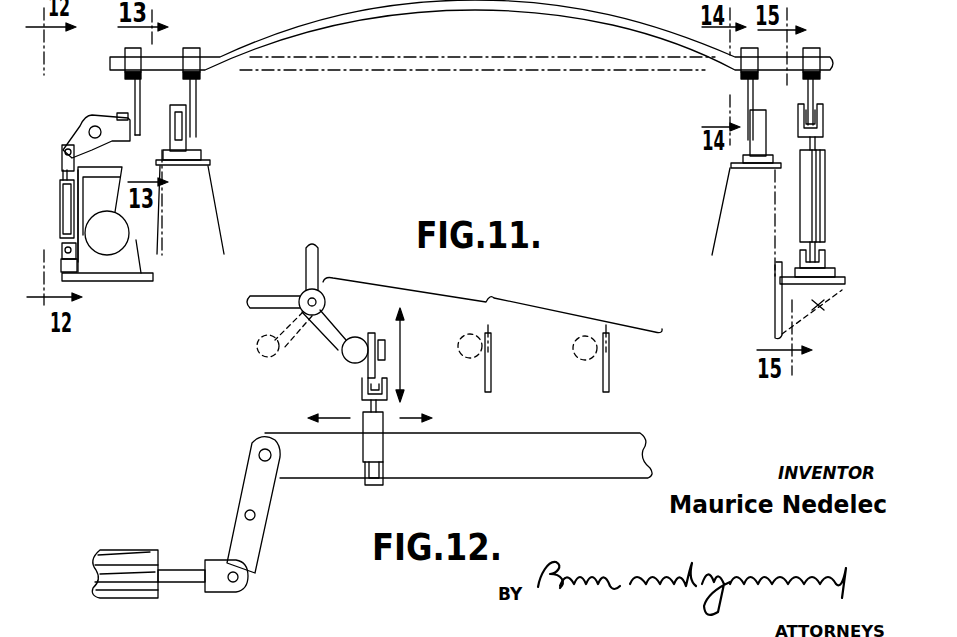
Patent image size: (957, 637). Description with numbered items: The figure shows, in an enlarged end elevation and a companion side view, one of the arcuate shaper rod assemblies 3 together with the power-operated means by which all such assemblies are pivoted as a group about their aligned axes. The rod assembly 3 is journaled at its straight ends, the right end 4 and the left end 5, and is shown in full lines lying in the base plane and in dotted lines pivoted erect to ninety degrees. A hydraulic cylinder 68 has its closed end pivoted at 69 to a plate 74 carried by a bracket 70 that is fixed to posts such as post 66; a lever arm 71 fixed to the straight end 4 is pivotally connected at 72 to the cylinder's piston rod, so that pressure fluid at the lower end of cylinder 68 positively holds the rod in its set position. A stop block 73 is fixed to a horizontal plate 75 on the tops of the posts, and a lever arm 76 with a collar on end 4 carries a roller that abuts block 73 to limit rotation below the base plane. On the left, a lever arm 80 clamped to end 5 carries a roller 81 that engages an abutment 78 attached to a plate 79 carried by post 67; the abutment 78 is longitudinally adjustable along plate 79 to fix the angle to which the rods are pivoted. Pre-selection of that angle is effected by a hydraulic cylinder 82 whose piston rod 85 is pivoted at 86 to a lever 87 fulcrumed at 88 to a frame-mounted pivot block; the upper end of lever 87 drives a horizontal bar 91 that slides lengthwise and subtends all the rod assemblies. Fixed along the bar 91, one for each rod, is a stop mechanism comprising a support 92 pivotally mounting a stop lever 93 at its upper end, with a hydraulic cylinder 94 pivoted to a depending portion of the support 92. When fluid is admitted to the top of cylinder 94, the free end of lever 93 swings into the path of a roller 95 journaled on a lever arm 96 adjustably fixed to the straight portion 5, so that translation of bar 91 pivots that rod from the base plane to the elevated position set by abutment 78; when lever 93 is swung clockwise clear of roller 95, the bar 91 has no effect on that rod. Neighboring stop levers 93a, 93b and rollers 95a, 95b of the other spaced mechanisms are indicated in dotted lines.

In FIG. 12, the rod assembly 3 is at (274, 297).
In FIG. 11, the straight end of rod 4 is at (830, 63).
In FIG. 11, the straight left end of rod 5 is at (112, 62).
In FIG. 11, the post 66 is at (735, 206).
In FIG. 11, the post 67 is at (198, 203).
In FIG. 11, the hydraulic cylinder 68 is at (822, 200).
In FIG. 11, the pivot 69 is at (828, 253).
In FIG. 11, the bracket 70 is at (829, 312).
In FIG. 11, the lever arm 71 is at (818, 97).
In FIG. 11, the pivotal connection 72 is at (820, 112).
In FIG. 11, the stop block 73 is at (760, 143).
In FIG. 11, the plate 74 is at (843, 288).
In FIG. 11, the horizontal plate 75 is at (736, 165).
In FIG. 11, the lever arm 76 is at (753, 100).
In FIG. 11, the abutment 78 is at (186, 143).
In FIG. 11, the plate 79 is at (212, 160).
In FIG. 11, the lever arm 80 is at (197, 93).
In FIG. 11, the roller 81 is at (183, 121).
In FIG. 12, the hydraulic cylinder 82 is at (130, 568).
In FIG. 12, the piston rod 85 is at (185, 571).
In FIG. 12, the pivotal connection 86 is at (240, 578).
In FIG. 12, the lever 87 is at (258, 465).
In FIG. 12, the fulcrum 88 is at (256, 516).
In FIG. 11, the horizontal bar 91 is at (105, 245).
In FIG. 12, the horizontal bar 91 is at (568, 478).
In FIG. 11, the support 92 is at (105, 190).
In FIG. 11, the stop lever 93 is at (88, 115).
In FIG. 12, the stop lever 93 is at (376, 366).
In FIG. 12, the stop lever 93a is at (492, 375).
In FIG. 12, the stop lever 93b is at (610, 375).
In FIG. 11, the hydraulic cylinder 94 is at (60, 198).
In FIG. 12, the hydraulic cylinder 94 is at (370, 450).
In FIG. 11, the roller 95 is at (122, 112).
In FIG. 12, the roller 95 is at (342, 352).
In FIG. 12, the roller 95a is at (477, 333).
In FIG. 12, the roller 95b is at (573, 342).
In FIG. 11, the lever arm 96 is at (140, 108).
In FIG. 12, the lever arm 96 is at (336, 325).